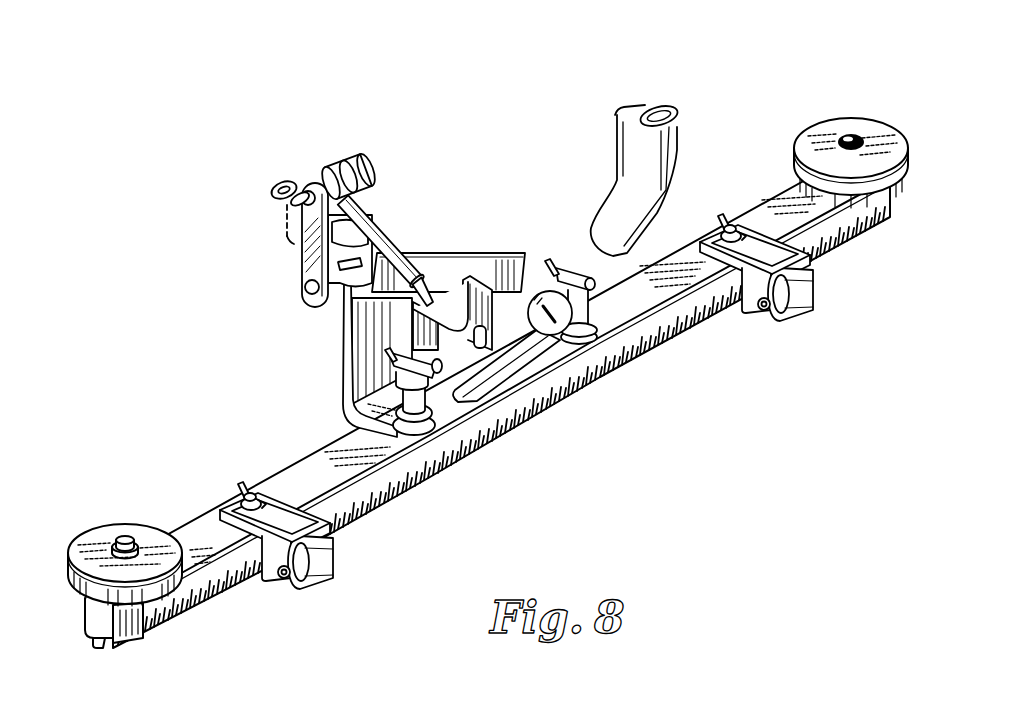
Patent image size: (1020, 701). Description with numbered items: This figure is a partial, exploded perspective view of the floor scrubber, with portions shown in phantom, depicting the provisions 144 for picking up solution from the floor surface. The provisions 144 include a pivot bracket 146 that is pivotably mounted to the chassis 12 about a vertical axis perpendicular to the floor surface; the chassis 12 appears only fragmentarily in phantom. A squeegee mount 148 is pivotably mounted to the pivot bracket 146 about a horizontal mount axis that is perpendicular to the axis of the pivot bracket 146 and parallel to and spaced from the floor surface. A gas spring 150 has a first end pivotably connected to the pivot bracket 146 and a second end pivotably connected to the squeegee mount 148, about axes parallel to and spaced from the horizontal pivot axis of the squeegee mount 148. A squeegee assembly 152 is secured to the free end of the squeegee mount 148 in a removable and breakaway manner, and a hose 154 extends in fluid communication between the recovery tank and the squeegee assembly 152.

The chassis 12 is at (242, 210).
The provisions for picking up solution 144 is at (399, 227).
The pivot bracket 146 is at (372, 180).
The squeegee mount 148 is at (507, 252).
The gas spring 150 is at (398, 247).
The squeegee assembly 152 is at (613, 387).
The hose 154 is at (678, 134).